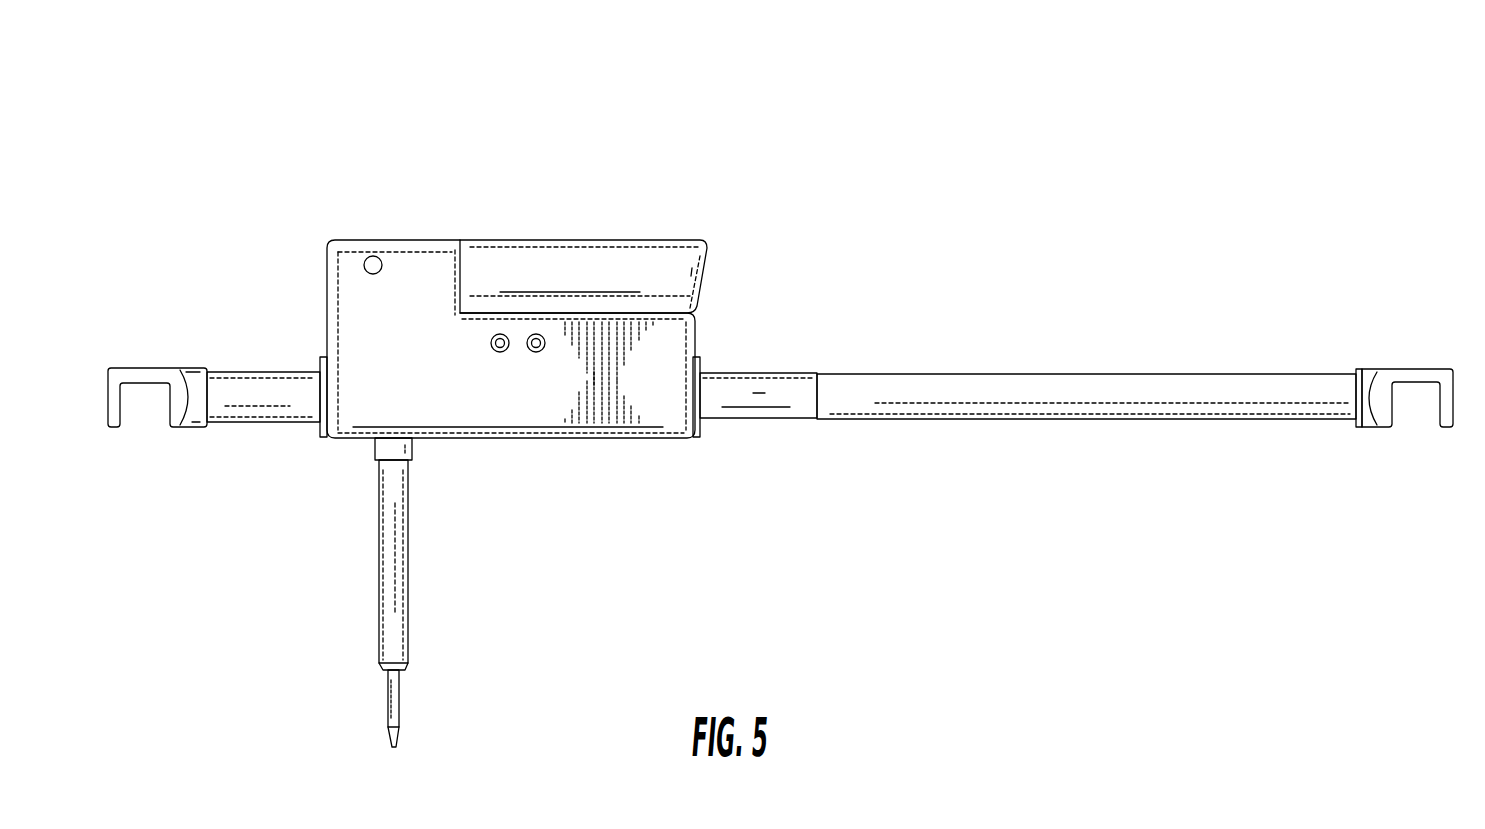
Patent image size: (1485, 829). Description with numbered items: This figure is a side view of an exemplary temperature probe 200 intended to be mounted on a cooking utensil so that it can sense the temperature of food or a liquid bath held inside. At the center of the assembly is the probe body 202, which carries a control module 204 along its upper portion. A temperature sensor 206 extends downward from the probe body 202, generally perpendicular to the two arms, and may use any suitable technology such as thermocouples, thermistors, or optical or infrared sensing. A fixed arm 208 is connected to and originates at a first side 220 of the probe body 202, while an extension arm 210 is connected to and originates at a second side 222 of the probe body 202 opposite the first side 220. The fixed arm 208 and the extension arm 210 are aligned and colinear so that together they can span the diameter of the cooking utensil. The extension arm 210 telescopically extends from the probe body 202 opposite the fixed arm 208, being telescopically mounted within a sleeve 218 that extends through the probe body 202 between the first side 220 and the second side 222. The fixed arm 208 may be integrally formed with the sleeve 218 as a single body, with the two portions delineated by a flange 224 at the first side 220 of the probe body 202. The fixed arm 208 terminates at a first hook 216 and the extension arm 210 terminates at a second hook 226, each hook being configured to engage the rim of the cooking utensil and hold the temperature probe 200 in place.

The temperature probe 200 is at (284, 103).
The probe body 202 is at (527, 412).
The control module 204 is at (658, 265).
The temperature sensor 206 is at (395, 630).
The fixed arm 208 is at (259, 412).
The extension arm 210 is at (1015, 375).
The first hook 216 is at (139, 368).
The sleeve 218 is at (762, 420).
The first side 220 is at (318, 314).
The second side 222 is at (706, 331).
The flange 224 is at (323, 437).
The second hook 226 is at (1397, 373).